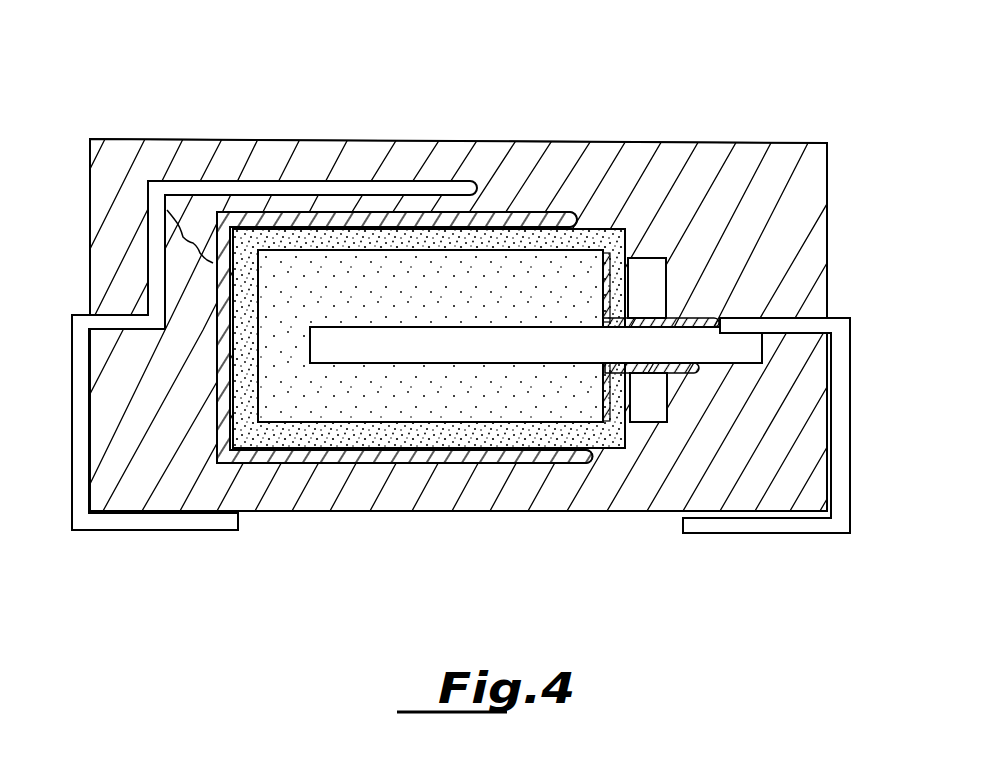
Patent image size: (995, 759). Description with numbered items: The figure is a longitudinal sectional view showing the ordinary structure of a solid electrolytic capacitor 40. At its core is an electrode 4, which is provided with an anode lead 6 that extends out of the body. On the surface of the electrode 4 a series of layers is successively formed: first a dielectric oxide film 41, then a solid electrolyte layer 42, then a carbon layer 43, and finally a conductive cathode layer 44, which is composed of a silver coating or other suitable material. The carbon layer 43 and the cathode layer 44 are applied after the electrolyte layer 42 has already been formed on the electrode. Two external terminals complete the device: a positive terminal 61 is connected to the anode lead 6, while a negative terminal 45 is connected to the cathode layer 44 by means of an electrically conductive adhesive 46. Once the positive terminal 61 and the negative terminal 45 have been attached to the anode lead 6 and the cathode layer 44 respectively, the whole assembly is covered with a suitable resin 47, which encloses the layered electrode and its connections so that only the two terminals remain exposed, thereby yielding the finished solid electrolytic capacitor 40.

The solid electrolytic capacitor 40 is at (322, 511).
The electrode 4 is at (462, 396).
The anode lead 6 is at (712, 343).
The dielectric oxide film 41 is at (697, 318).
The solid electrolyte layer 42 is at (630, 252).
The carbon layer 43 is at (597, 227).
The cathode layer 44 is at (498, 210).
The negative terminal 45 is at (78, 387).
The electrically conductive adhesive 46 is at (345, 205).
The resin 47 is at (740, 377).
The positive terminal 61 is at (843, 463).